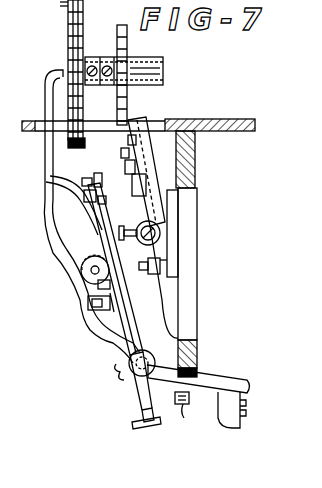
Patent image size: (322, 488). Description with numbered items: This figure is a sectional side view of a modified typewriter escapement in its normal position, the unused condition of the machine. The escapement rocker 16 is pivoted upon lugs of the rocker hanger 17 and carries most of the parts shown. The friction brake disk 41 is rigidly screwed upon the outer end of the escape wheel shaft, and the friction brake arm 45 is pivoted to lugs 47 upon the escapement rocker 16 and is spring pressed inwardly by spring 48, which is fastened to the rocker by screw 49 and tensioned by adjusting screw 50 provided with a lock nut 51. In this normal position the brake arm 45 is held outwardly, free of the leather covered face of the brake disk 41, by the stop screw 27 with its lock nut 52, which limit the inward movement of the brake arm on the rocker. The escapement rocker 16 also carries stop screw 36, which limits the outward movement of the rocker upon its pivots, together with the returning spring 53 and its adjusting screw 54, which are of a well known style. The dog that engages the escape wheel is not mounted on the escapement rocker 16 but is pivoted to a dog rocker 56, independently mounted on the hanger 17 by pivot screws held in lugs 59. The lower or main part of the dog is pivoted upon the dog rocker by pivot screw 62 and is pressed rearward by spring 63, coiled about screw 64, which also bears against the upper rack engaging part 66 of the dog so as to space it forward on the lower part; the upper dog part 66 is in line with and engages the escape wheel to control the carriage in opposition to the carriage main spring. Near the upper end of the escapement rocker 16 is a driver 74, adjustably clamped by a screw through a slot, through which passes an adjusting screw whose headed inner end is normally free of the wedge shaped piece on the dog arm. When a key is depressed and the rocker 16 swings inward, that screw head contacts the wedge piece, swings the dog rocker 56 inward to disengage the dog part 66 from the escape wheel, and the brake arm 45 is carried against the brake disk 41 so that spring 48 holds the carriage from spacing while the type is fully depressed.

The friction brake disk 41 is at (52, 5).
The friction brake arm 45 is at (46, 155).
The upper rack engaging part of the dog 66 is at (128, 120).
The rocker hanger 17 is at (197, 168).
The spring 63 is at (148, 190).
The pivot screw 62 is at (128, 171).
The lugs 59 is at (161, 235).
The dog rocker 56 is at (160, 212).
The lugs 47 is at (138, 214).
The driver 74 is at (87, 182).
The lock nut 52 is at (100, 232).
The stop screw 27 is at (90, 220).
The spring 48 is at (80, 281).
The screw 64 is at (81, 270).
The adjusting screw 50 is at (92, 312).
The lock nut 51 is at (100, 335).
The screw 49 is at (124, 372).
The returning spring 53 is at (135, 388).
The adjusting screw 54 is at (144, 414).
The escapement rocker 16 is at (222, 405).
The stop screw 36 is at (185, 416).